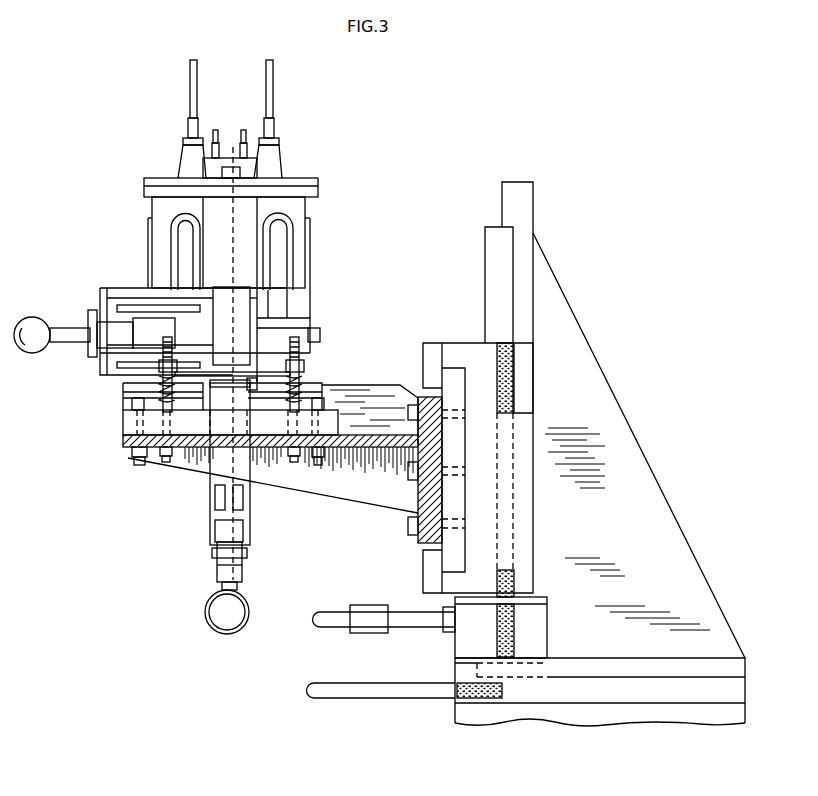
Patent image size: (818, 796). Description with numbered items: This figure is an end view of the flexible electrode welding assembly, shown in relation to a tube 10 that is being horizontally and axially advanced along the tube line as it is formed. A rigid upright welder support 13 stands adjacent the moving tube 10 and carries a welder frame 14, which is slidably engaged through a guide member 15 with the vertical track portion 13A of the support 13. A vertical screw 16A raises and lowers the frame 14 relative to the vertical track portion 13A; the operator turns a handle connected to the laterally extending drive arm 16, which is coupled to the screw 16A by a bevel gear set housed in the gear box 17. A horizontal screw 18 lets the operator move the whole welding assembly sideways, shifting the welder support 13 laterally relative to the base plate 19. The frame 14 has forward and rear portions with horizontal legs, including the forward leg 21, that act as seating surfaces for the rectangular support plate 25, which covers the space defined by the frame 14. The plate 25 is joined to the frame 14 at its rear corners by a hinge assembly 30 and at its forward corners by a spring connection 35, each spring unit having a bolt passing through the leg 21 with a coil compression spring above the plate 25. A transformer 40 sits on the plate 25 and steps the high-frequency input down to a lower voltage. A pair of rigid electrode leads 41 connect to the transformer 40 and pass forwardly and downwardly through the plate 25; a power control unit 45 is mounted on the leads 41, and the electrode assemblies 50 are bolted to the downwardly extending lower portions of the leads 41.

The tube 10 is at (245, 630).
The welder support 13 is at (628, 414).
The vertical track portion 13A is at (527, 322).
The welder frame 14 is at (358, 384).
The guide member 15 is at (480, 358).
The drive arm 16 is at (409, 620).
The vertical screw 16A is at (516, 526).
The gear box 17 is at (535, 632).
The horizontal screw 18 is at (472, 705).
The base plate 19 is at (705, 693).
The horizontal leg 21 is at (125, 441).
The support plate 25 is at (125, 416).
The hinge assembly 30 is at (140, 472).
The spring connection 35 is at (156, 384).
The transformer 40 is at (314, 179).
The electrode leads 41 is at (243, 467).
The power control unit 45 is at (223, 314).
The electrode assemblies 50 is at (205, 530).